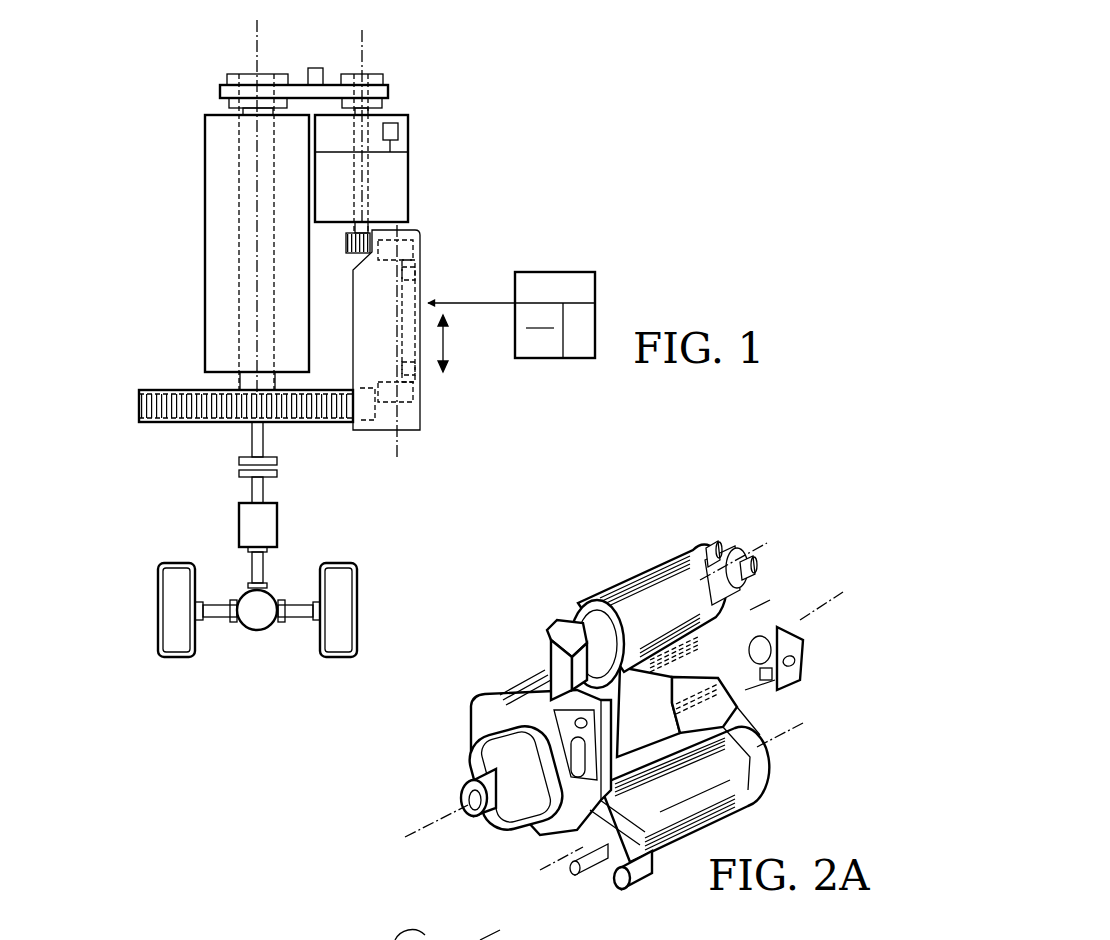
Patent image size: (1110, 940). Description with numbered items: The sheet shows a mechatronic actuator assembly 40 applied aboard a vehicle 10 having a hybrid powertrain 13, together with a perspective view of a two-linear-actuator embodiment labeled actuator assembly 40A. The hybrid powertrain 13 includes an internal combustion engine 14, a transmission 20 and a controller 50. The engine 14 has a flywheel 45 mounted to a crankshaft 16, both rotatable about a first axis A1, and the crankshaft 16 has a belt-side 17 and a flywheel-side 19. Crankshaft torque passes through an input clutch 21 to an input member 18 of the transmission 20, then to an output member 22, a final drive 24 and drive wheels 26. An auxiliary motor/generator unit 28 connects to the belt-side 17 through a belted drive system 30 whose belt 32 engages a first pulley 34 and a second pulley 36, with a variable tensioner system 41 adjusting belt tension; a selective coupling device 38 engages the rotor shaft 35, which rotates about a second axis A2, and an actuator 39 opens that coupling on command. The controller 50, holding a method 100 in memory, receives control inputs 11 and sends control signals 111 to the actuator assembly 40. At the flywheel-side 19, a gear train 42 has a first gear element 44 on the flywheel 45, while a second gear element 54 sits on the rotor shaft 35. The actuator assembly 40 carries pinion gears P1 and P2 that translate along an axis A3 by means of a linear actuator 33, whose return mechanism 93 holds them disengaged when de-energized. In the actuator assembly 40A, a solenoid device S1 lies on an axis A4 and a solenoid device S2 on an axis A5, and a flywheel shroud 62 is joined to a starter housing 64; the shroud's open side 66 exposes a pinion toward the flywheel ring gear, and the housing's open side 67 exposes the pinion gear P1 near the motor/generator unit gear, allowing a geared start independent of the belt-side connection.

In FIG. 1, the vehicle 10 is at (575, 30).
In FIG. 1, the control inputs 11 is at (572, 269).
In FIG. 1, the hybrid powertrain 13 is at (132, 269).
In FIG. 1, the internal combustion engine 14 is at (203, 240).
In FIG. 1, the crankshaft 16 is at (240, 110).
In FIG. 1, the belt-side 17 is at (162, 109).
In FIG. 1, the input member 18 is at (266, 495).
In FIG. 1, the flywheel-side 19 is at (298, 381).
In FIG. 1, the transmission 20 is at (278, 525).
In FIG. 1, the input clutch 21 is at (447, 345).
In FIG. 1, the output member 22 is at (266, 568).
In FIG. 1, the final drive 24 is at (258, 632).
In FIG. 1, the drive wheels 26 is at (160, 610).
In FIG. 1, the motor/generator unit 28 is at (408, 168).
In FIG. 1, the belted drive system 30 is at (472, 80).
In FIG. 1, the belt 32 is at (302, 78).
In FIG. 1, the linear actuator 33 is at (420, 292).
In FIG. 1, the first pulley 34 is at (383, 82).
In FIG. 1, the rotor shaft 35 is at (368, 112).
In FIG. 1, the second pulley 36 is at (243, 73).
In FIG. 1, the selective coupling device 38 is at (408, 122).
In FIG. 1, the actuator 39 is at (398, 133).
In FIG. 1, the mechatronic actuator assembly 40 is at (420, 360).
In FIG. 2A, the actuator assembly 40A is at (792, 546).
In FIG. 1, the variable tensioner system 41 is at (315, 68).
In FIG. 1, the gear train 42 is at (165, 432).
In FIG. 1, the first gear element 44 is at (160, 412).
In FIG. 1, the flywheel 45 is at (182, 391).
In FIG. 1, the controller 50 is at (590, 306).
In FIG. 1, the second gear element 54 is at (357, 256).
In FIG. 2A, the flywheel shroud 62 is at (502, 813).
In FIG. 2A, the starter housing 64 is at (734, 671).
In FIG. 2A, the open side 66 is at (468, 763).
In FIG. 2A, the open side 67 is at (800, 647).
In FIG. 1, the return mechanism 93 is at (415, 268).
In FIG. 1, the method 100 is at (540, 318).
In FIG. 1, the control signals 111 is at (503, 303).
In FIG. 1, the first axis A1 is at (257, 48).
In FIG. 1, the second axis A2 is at (362, 47).
In FIG. 1, the axis of the actuator assembly A3 is at (397, 457).
In FIG. 2A, the axis of the actuator assembly A3 is at (443, 813).
In FIG. 2A, the axis A4 is at (780, 737).
In FIG. 2A, the axis A5 is at (757, 553).
In FIG. 1, the pinion gear P1 is at (418, 248).
In FIG. 2A, the pinion gear P1 is at (765, 673).
In FIG. 1, the pinion gear P2 is at (418, 398).
In FIG. 2A, the solenoid device S1 is at (709, 789).
In FIG. 2A, the solenoid device S2 is at (657, 614).